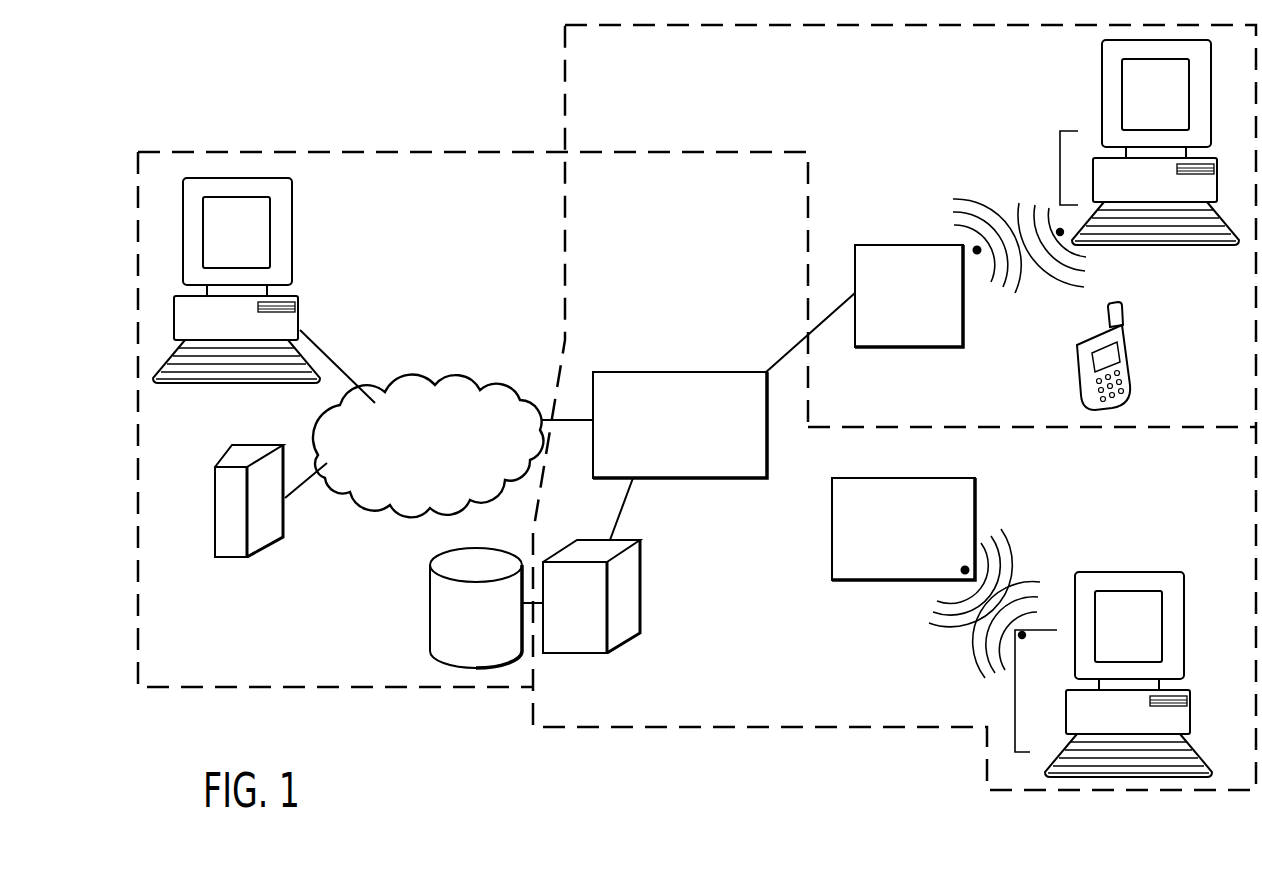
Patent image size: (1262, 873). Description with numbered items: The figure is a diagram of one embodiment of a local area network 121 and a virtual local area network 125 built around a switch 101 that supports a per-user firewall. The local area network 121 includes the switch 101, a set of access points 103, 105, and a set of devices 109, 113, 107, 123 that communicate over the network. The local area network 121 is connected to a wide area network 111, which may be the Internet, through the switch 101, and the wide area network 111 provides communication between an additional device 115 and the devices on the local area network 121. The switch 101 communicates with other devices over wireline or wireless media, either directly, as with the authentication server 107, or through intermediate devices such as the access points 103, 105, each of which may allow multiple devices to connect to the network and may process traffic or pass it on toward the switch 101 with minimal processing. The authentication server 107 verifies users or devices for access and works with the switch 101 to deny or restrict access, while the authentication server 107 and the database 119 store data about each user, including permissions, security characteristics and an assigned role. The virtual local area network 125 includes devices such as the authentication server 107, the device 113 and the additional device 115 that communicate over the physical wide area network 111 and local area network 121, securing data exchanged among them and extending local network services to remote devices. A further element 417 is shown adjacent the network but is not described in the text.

The switch 101 is at (697, 457).
The access point 103 is at (927, 322).
The access point 105 is at (918, 552).
The authentication server 107 is at (595, 618).
The device 109 is at (1200, 245).
The wide area network 111 is at (445, 470).
The device 113 is at (1132, 570).
The additional device 115 is at (292, 217).
The database 119 is at (493, 650).
The local area network 121 is at (672, 97).
The device 123 is at (1122, 323).
The virtual local area network 125 is at (500, 213).
The server tower 417 is at (268, 548).